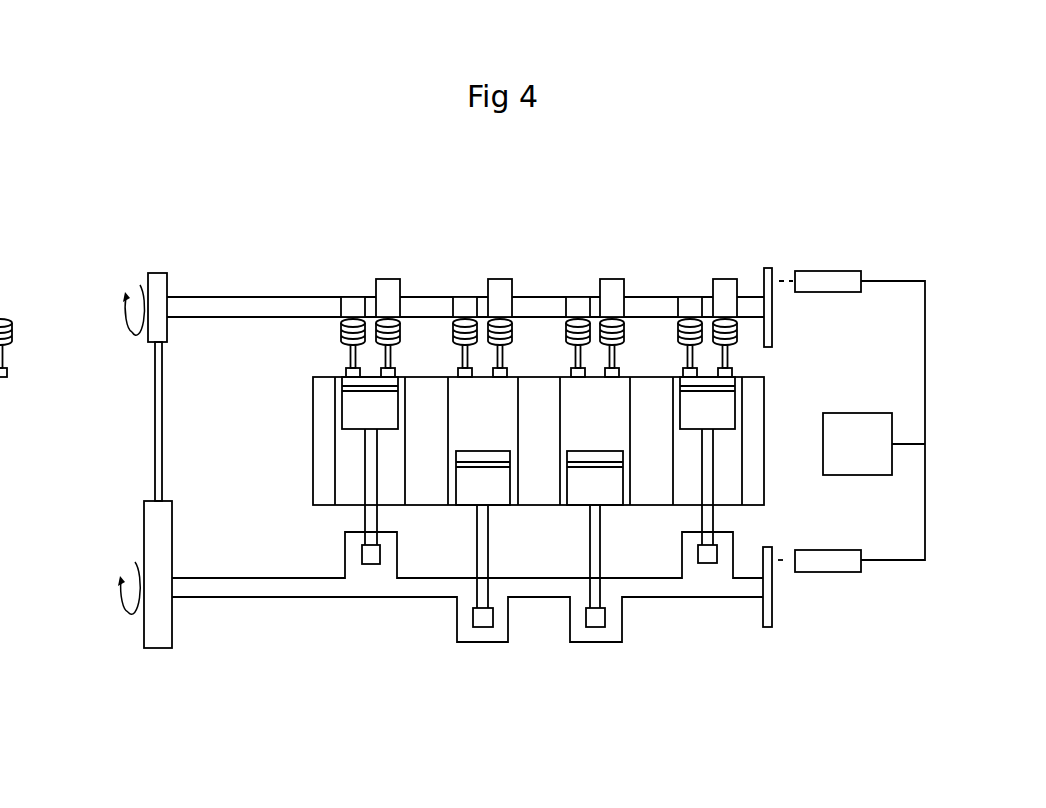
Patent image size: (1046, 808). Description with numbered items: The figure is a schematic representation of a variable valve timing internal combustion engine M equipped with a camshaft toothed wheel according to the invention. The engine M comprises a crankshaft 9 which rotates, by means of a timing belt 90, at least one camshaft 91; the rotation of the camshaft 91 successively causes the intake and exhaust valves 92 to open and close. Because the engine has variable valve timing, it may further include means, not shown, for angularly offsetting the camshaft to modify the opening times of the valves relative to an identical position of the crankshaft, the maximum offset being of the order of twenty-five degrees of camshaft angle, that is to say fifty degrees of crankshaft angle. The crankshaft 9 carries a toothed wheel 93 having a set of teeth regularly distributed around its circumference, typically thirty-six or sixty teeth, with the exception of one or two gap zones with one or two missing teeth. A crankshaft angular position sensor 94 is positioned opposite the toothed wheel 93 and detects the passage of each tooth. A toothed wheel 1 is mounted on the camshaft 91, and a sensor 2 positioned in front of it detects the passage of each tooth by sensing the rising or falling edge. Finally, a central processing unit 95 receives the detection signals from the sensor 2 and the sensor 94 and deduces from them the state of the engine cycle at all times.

The engine M is at (123, 238).
The toothed wheel 1 is at (768, 272).
The sensor 2 is at (835, 272).
The crankshaft 9 is at (268, 596).
The timing belt 90 is at (155, 440).
The camshaft 91 is at (268, 304).
The intake and exhaust valves 92 is at (387, 290).
The toothed wheel 93 is at (768, 617).
The crankshaft angular position sensor 94 is at (835, 562).
The central processing unit 95 is at (872, 455).